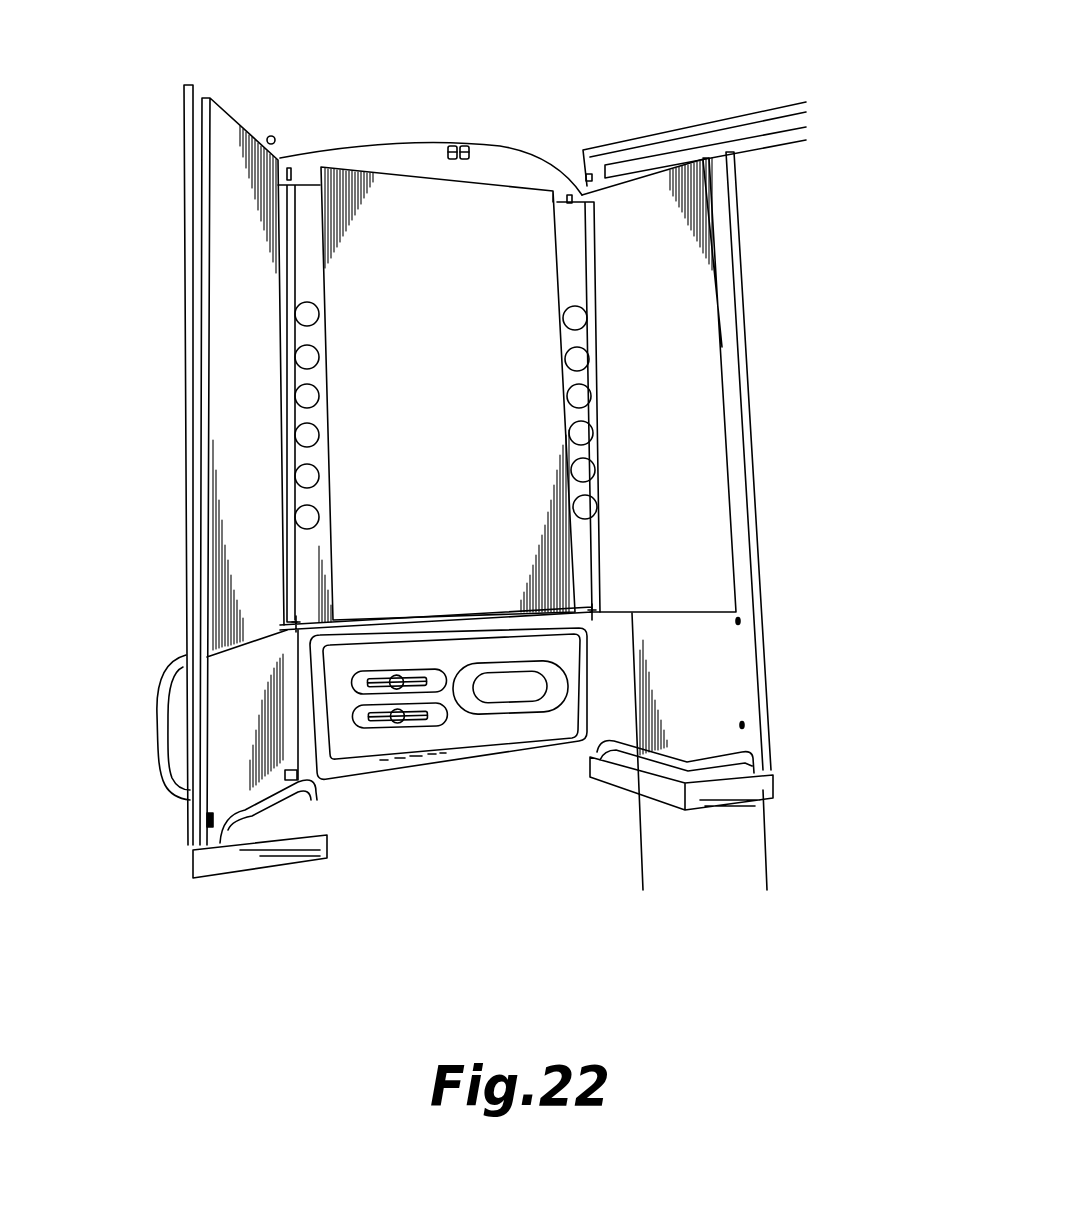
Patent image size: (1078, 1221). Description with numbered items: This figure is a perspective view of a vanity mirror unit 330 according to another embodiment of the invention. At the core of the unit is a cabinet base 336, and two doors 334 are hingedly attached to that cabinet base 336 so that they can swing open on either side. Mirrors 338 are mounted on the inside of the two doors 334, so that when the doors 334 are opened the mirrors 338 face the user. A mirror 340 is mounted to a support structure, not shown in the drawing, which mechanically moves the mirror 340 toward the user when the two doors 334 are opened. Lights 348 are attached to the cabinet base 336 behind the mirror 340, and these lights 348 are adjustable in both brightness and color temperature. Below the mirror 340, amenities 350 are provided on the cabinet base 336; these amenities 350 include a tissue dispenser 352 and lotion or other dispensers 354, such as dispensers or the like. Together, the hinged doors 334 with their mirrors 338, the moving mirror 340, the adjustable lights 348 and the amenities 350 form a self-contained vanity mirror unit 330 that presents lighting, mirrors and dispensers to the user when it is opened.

The vanity mirror unit 330 is at (848, 82).
The doors 334 is at (242, 713).
The cabinet base 336 is at (418, 158).
The mirrors 338 is at (241, 232).
The mirror 340 is at (497, 223).
The lights 348 is at (567, 319).
The amenities 350 is at (447, 740).
The tissue dispenser 352 is at (513, 687).
The lotion or other dispensers 354 is at (358, 718).